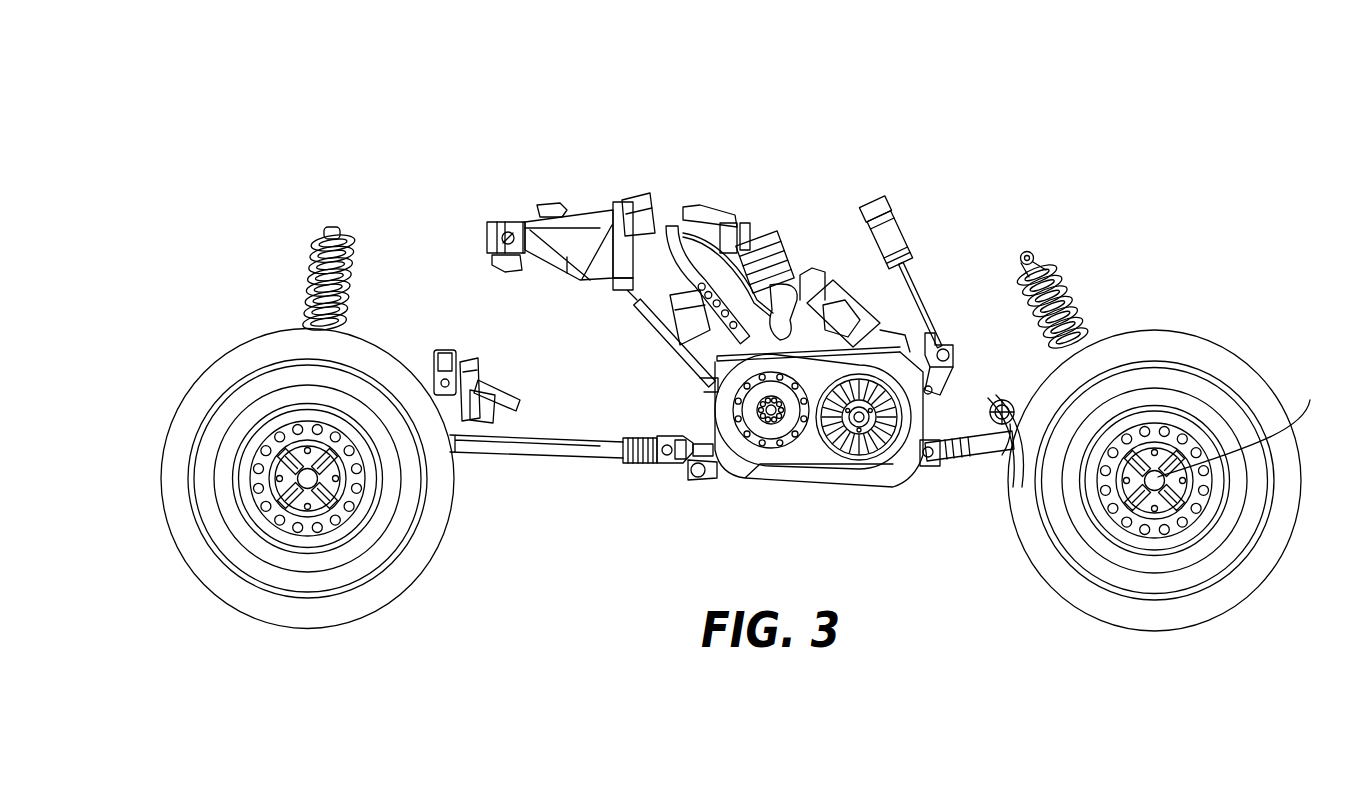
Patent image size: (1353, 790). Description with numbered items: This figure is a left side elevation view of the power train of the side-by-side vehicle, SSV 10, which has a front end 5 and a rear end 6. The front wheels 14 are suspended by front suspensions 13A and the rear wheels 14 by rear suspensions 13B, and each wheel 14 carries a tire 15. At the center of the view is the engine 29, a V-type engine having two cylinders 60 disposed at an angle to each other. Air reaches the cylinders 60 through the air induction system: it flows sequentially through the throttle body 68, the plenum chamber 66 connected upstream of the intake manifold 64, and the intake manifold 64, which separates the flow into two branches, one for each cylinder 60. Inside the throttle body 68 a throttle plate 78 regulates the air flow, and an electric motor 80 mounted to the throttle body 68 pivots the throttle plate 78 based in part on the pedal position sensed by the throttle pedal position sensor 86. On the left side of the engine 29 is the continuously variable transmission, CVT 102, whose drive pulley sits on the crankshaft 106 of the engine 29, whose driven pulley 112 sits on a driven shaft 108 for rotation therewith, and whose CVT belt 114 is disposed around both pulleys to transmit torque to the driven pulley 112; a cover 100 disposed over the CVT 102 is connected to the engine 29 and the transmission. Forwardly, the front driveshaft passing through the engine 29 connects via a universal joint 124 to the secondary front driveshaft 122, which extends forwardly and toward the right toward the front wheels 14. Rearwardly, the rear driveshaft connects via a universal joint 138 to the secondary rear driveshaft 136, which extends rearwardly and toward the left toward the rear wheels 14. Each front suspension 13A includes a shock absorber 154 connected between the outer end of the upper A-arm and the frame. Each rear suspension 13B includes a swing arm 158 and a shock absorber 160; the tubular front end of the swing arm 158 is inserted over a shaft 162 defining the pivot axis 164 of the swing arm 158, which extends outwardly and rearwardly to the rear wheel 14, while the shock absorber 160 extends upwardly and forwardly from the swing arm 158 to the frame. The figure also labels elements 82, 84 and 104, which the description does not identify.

The front end 5 is at (160, 272).
The rear end 6 is at (1272, 265).
The SSV 10 is at (928, 118).
The front suspensions 13A is at (287, 232).
The rear suspensions 13B is at (1122, 292).
The wheels 14 is at (282, 531).
The tire 15 is at (304, 634).
The engine 29 is at (813, 268).
The cylinders 60 is at (857, 303).
The intake manifold 64 is at (757, 228).
The plenum chamber 66 is at (600, 232).
The throttle body 68 is at (473, 227).
The throttle plate 78 is at (502, 216).
The electric motor 80 is at (500, 272).
The bracket 82 is at (513, 393).
The bracket 84 is at (476, 373).
The throttle pedal position sensor 86 is at (445, 343).
The cover 100 is at (750, 476).
The continuously variable transmission (CVT) 102 is at (828, 484).
The wheel axle 104 is at (1243, 427).
The crankshaft 106 is at (758, 415).
The driven shaft 108 is at (866, 484).
The driven pulley 112 is at (902, 470).
The CVT belt 114 is at (782, 472).
The secondary front driveshaft 122 is at (553, 452).
The universal joint 124 is at (668, 468).
The secondary rear driveshaft 136 is at (987, 455).
The universal joint 138 is at (929, 478).
The shock absorber 154 is at (318, 268).
The swing arm 158 is at (1013, 398).
The shock absorber 160 is at (1068, 272).
The shaft 162 is at (1003, 426).
The pivot axis 164 is at (990, 398).